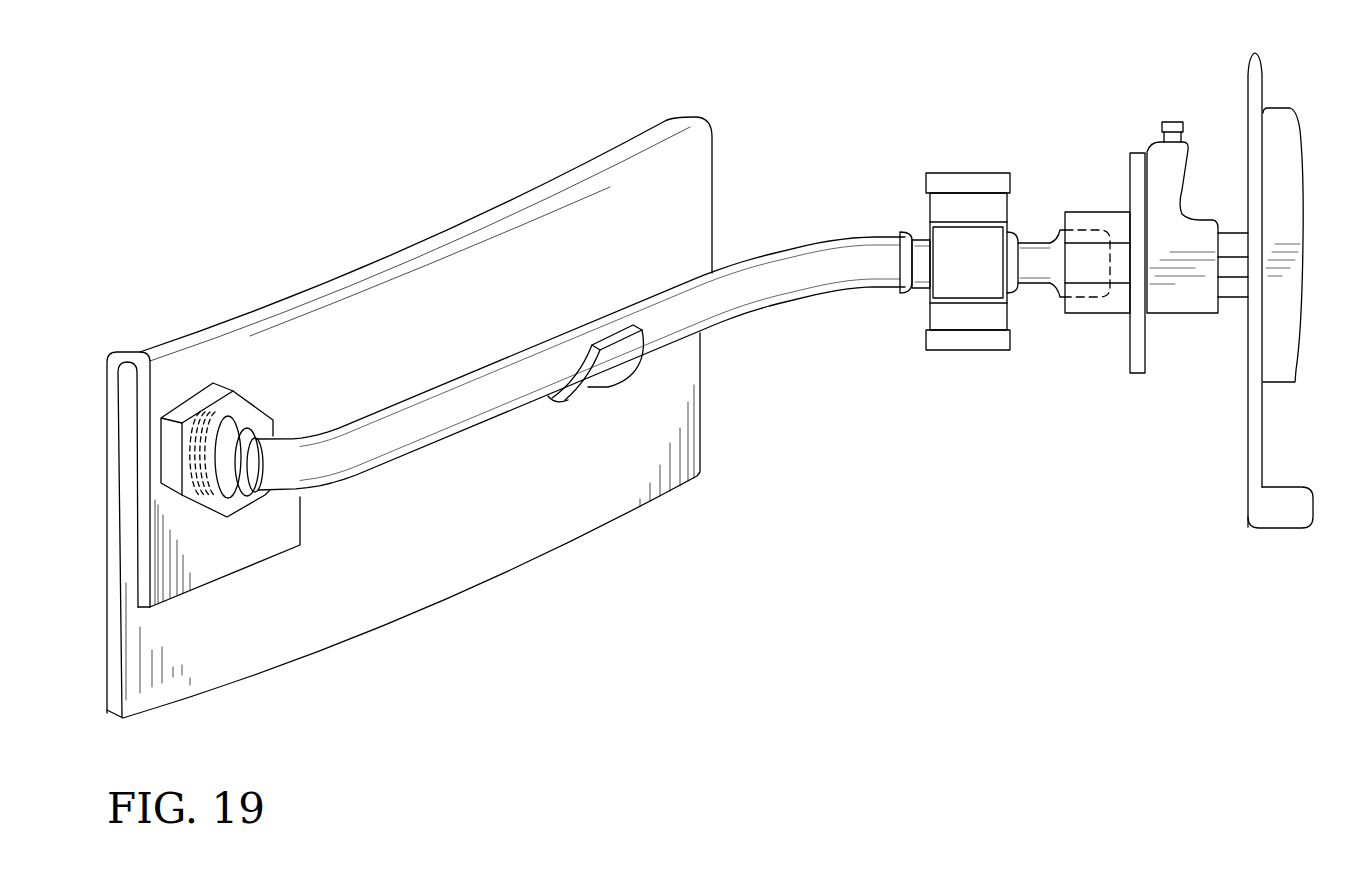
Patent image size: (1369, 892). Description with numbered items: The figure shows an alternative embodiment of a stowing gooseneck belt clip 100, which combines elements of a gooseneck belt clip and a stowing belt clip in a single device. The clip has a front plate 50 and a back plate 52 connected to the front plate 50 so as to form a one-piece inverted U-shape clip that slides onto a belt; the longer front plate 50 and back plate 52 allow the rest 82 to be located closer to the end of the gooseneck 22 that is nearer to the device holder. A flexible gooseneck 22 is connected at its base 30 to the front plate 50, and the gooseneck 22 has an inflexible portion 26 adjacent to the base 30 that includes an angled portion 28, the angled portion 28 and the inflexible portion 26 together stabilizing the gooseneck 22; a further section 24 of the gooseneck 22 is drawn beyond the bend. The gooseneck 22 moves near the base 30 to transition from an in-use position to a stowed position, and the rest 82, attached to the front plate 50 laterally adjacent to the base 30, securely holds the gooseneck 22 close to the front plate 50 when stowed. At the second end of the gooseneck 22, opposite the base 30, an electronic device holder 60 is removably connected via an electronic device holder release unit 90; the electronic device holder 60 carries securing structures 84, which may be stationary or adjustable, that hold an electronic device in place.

The stowing gooseneck belt clip 100 is at (793, 120).
The flexible gooseneck 22 is at (580, 366).
The pipe section 24 is at (818, 283).
The inflexible portion 26 is at (250, 428).
The angled portion 28 is at (313, 480).
The base 30 is at (215, 407).
The front plate 50 is at (692, 188).
The back plate 52 is at (273, 625).
The electronic device holder 60 is at (1248, 460).
The rest 82 is at (625, 378).
The securing structures 84 is at (1293, 177).
The electronic device holder release unit 90 is at (1170, 303).